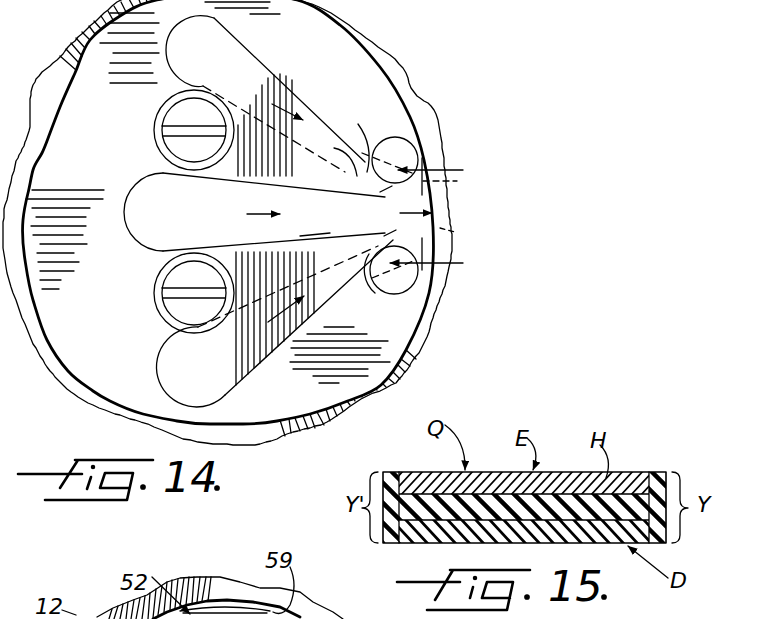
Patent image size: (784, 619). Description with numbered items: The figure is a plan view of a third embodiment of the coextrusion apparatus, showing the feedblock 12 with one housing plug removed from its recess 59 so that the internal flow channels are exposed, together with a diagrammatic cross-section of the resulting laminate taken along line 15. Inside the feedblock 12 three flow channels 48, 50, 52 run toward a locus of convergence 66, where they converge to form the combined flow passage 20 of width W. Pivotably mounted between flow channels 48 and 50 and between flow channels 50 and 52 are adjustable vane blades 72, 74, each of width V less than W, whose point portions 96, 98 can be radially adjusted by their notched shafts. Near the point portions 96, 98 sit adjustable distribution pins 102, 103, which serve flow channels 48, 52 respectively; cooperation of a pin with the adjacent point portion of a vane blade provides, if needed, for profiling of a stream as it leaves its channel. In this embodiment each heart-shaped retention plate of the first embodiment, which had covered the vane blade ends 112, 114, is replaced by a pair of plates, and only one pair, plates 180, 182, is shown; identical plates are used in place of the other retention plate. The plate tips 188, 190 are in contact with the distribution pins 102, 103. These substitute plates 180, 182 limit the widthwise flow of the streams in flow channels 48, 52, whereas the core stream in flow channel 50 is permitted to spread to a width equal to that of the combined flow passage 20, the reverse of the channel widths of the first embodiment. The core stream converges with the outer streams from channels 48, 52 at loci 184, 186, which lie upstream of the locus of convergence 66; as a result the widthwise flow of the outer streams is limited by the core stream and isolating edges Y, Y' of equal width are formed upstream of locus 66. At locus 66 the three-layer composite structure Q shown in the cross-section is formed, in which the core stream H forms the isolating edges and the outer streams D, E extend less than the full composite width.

The feedblock 12 is at (372, 36).
The line 15— 15 is at (442, 219).
The combined flow passage 20 is at (455, 232).
The flow channel 48 is at (248, 323).
The flow channel 50 is at (237, 197).
The flow channel 52 is at (235, 62).
The recess 59 is at (100, 58).
The locus of convergence 66 is at (402, 212).
The adjustable vane blade 72 is at (257, 238).
The adjustable vane blade 74 is at (252, 184).
The point portion 96 is at (304, 296).
The point portion 98 is at (333, 151).
The adjustable distribution pin 102 is at (406, 285).
The adjustable distribution pin 103 is at (413, 137).
The vane blade end 112 is at (320, 242).
The vane blade end 114 is at (304, 185).
The plate 180 is at (155, 281).
The plate 182 is at (155, 117).
The locus 184 is at (392, 240).
The locus 186 is at (382, 192).
The plate tip 188 is at (386, 291).
The plate tip 190 is at (361, 136).